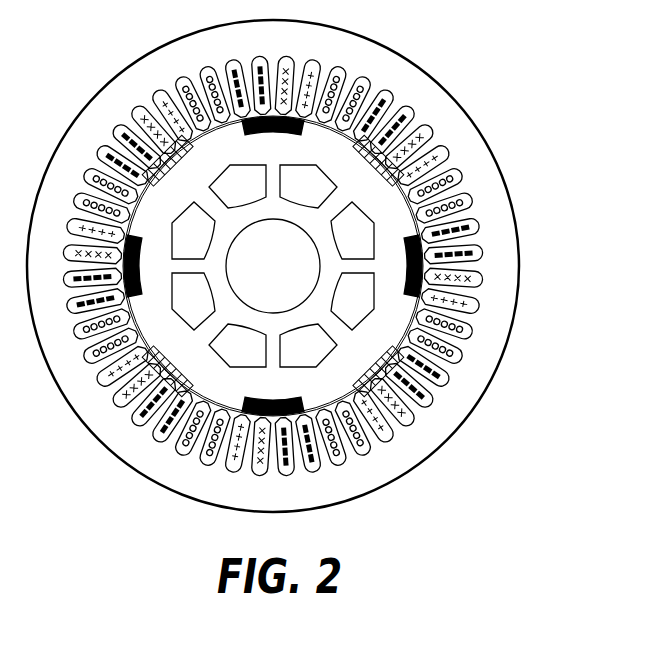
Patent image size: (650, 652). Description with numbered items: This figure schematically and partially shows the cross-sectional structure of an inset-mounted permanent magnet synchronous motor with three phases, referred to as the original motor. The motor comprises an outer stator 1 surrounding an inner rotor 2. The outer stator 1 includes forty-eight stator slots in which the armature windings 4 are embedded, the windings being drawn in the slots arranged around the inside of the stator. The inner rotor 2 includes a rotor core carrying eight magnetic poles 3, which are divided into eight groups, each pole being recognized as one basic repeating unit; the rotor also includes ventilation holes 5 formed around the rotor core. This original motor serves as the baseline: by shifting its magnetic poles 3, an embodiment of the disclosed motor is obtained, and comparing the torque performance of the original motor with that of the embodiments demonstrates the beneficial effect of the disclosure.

The outer stator 1 is at (273, 261).
The inner rotor 2 is at (308, 229).
The magnetic poles 3 is at (326, 253).
The armature windings 4 is at (284, 266).
The ventilation holes 5 is at (296, 347).